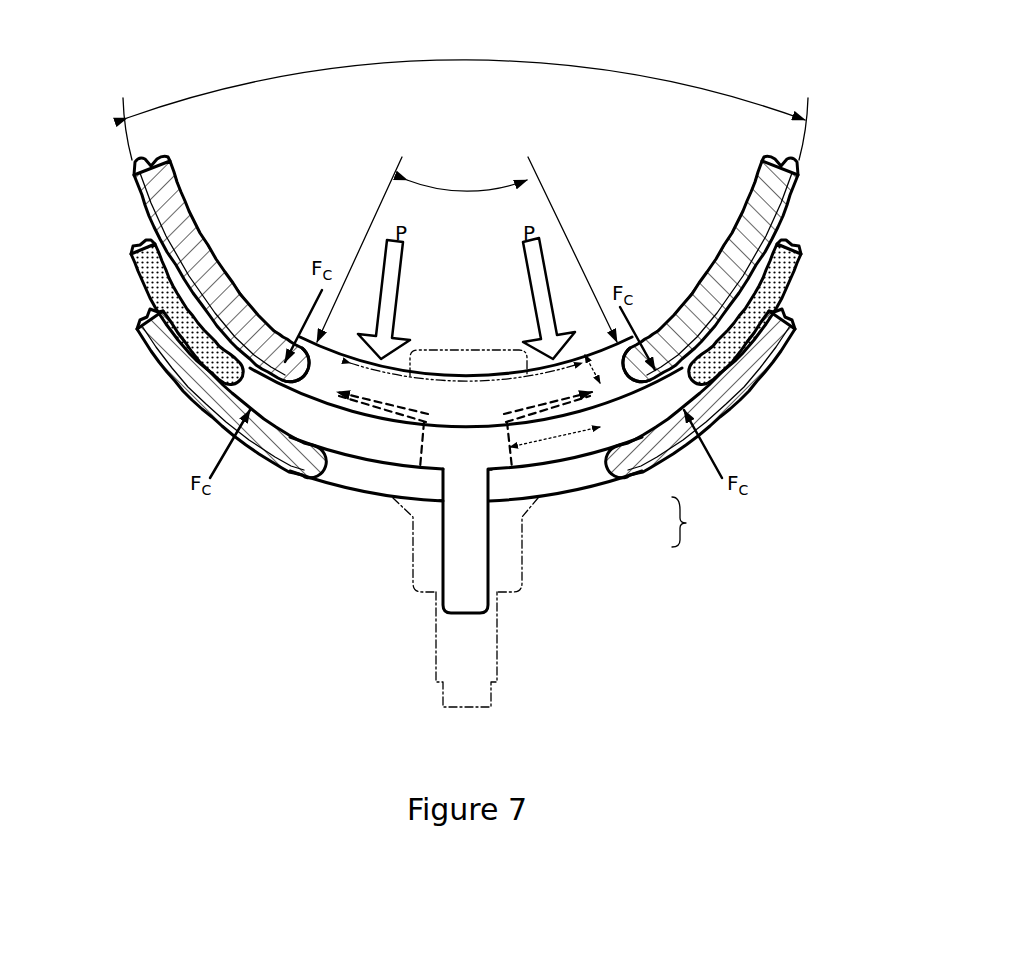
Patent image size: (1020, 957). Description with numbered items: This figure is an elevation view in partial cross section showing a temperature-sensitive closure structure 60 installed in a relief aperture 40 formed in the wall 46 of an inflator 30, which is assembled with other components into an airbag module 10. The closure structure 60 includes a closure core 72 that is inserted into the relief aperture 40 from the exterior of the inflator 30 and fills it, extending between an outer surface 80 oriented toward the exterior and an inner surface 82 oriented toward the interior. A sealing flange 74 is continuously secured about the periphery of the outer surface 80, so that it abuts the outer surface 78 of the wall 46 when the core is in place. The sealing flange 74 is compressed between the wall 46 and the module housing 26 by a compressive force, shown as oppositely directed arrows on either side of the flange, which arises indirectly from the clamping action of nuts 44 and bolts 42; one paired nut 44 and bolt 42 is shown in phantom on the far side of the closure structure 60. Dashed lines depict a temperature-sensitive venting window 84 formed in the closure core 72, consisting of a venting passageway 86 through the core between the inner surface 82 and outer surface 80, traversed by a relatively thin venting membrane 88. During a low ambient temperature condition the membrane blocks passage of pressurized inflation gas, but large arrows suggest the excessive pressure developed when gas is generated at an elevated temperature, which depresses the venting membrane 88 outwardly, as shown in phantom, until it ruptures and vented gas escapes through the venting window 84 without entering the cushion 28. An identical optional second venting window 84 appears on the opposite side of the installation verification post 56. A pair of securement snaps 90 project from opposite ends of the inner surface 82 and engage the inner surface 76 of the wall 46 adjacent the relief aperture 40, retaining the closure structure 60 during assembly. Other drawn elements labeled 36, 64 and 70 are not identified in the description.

The airbag module 10 is at (690, 60).
The module housing 26 is at (150, 365).
The cushion 28 is at (142, 253).
The inflator 30 is at (465, 109).
The housing ring 36 is at (367, 478).
The relief aperture 40 is at (308, 372).
The bolt 42 is at (498, 650).
The nut 44 is at (522, 535).
The wall 46 is at (135, 187).
The installation verification post 56 is at (478, 556).
The temperature-sensitive closure structure 60 is at (398, 553).
The band liner 64 is at (240, 400).
The inner ring 70 is at (487, 363).
The closure core 72 is at (467, 179).
The sealing flange 74 is at (302, 438).
The inner surface of wall 76 is at (182, 185).
The outer surface of wall 78 is at (141, 210).
The outer surface of closure core 80 is at (490, 478).
The inner surface of closure core 82 is at (349, 358).
The venting window 84 is at (694, 522).
The venting passageway 86 is at (553, 430).
The venting membrane 88 is at (597, 380).
The securement snap 90 is at (343, 285).